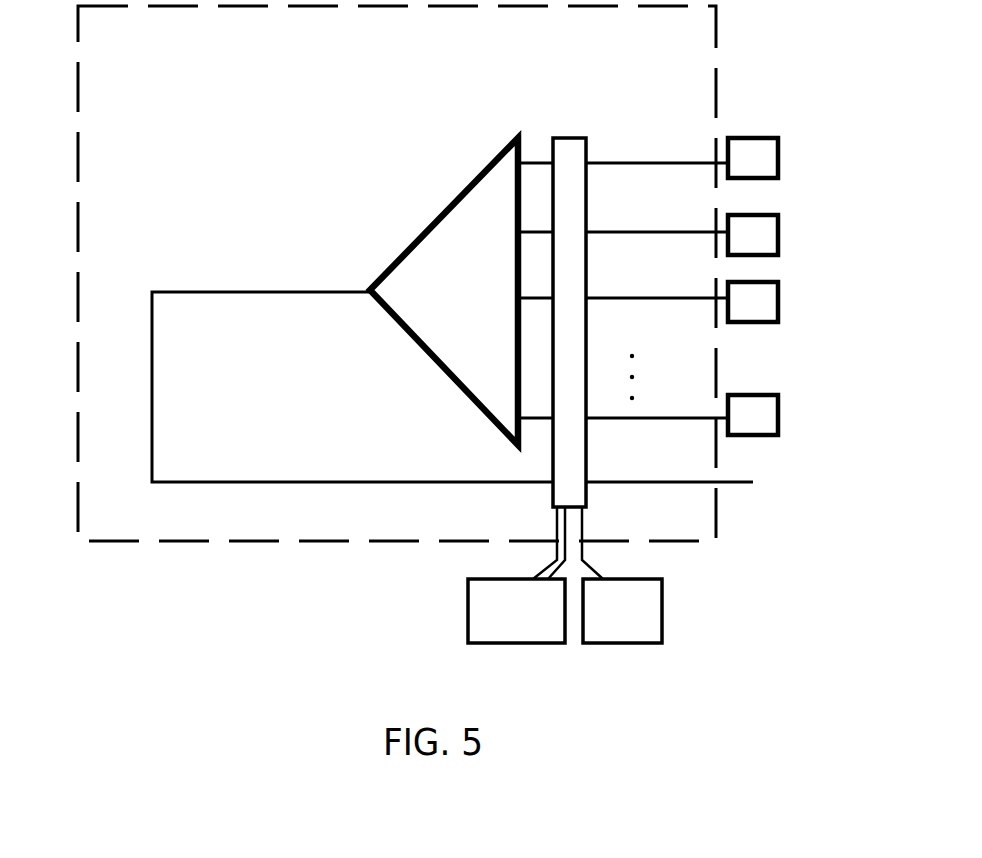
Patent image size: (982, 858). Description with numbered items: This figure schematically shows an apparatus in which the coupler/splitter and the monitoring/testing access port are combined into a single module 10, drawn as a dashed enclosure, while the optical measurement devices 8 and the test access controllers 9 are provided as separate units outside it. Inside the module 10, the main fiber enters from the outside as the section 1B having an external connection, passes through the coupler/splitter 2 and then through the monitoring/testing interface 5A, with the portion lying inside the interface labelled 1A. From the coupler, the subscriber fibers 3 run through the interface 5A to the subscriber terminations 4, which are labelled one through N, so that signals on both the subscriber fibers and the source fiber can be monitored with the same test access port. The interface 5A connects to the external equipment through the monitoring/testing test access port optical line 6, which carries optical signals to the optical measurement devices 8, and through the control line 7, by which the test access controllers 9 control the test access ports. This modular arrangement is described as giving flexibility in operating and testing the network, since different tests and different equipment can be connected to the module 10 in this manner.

The section of main fiber within test interface 1A is at (712, 483).
The section of main fiber with external connection 1B is at (256, 278).
The amplifier 2 is at (415, 216).
The subscriber fibers 3 is at (646, 159).
The subscriber terminations 4 is at (756, 122).
The monitoring/testing interface 5A is at (556, 128).
The monitoring/testing test access port optical line 6 is at (545, 547).
The control line 7 is at (595, 533).
The optical measurement devices 8 is at (465, 624).
The test access controllers 9 is at (683, 637).
The module 10 is at (156, 558).